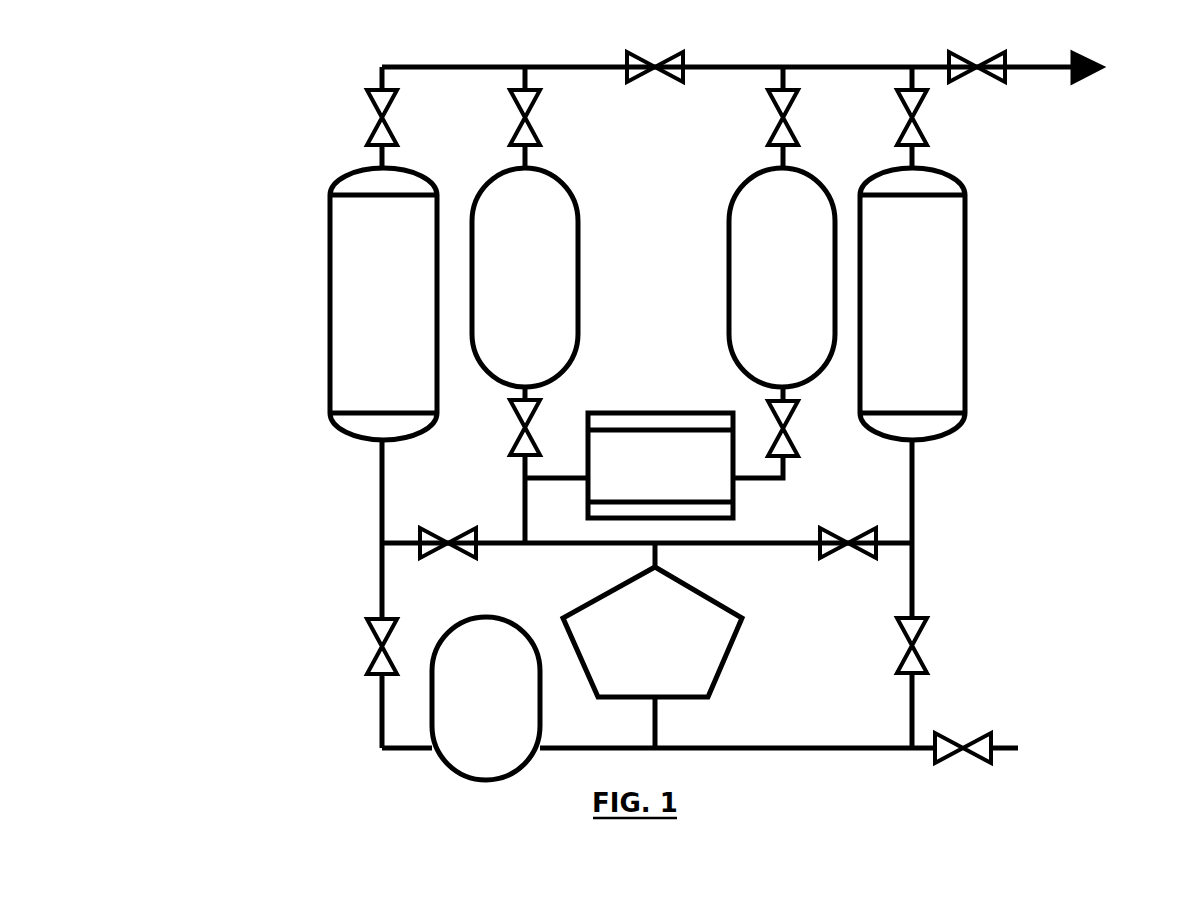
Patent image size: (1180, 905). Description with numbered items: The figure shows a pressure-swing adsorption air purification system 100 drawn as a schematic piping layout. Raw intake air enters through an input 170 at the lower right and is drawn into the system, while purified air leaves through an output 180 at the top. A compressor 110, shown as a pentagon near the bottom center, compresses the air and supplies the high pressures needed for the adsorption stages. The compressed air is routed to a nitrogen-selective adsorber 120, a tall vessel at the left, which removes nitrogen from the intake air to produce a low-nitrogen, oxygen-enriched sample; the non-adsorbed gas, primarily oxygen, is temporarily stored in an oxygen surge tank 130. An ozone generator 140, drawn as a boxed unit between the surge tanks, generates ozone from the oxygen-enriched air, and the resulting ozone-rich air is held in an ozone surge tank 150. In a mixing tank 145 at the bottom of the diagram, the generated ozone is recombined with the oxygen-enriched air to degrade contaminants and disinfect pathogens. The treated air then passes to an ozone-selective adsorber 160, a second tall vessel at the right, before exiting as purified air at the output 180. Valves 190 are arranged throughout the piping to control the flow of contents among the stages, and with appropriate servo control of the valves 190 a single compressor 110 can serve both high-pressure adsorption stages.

The PSA air purification system 100 is at (290, 118).
The compressor 110 is at (713, 688).
The nitrogen-selective adsorber 120 is at (326, 293).
The oxygen surge tank 130 is at (566, 181).
The ozone generator 140 is at (647, 410).
The mixing tank 145 is at (499, 614).
The ozone surge tank 150 is at (726, 268).
The ozone-selective adsorber 160 is at (968, 233).
The input 170 is at (1012, 752).
The output 180 is at (1103, 67).
The valves 190 is at (364, 620).